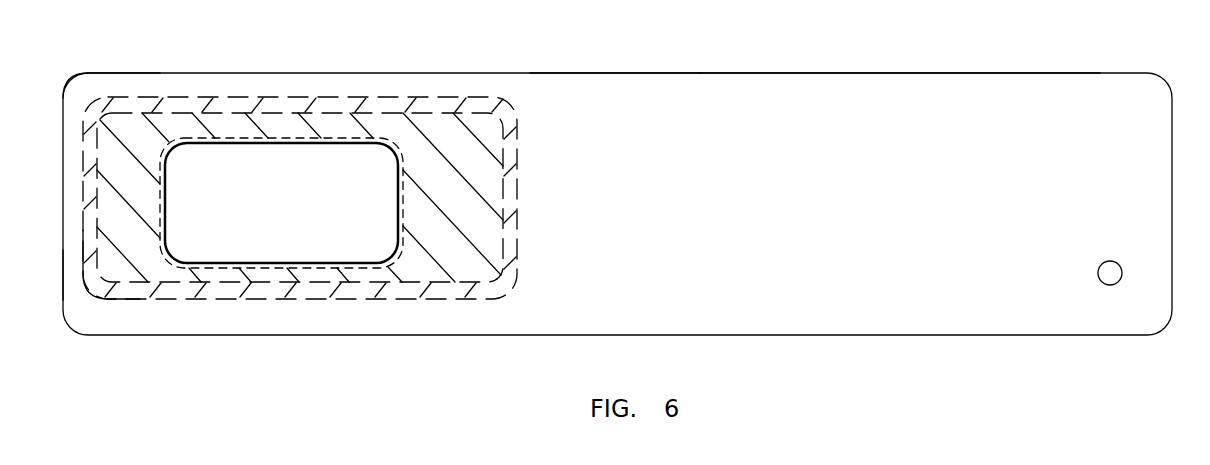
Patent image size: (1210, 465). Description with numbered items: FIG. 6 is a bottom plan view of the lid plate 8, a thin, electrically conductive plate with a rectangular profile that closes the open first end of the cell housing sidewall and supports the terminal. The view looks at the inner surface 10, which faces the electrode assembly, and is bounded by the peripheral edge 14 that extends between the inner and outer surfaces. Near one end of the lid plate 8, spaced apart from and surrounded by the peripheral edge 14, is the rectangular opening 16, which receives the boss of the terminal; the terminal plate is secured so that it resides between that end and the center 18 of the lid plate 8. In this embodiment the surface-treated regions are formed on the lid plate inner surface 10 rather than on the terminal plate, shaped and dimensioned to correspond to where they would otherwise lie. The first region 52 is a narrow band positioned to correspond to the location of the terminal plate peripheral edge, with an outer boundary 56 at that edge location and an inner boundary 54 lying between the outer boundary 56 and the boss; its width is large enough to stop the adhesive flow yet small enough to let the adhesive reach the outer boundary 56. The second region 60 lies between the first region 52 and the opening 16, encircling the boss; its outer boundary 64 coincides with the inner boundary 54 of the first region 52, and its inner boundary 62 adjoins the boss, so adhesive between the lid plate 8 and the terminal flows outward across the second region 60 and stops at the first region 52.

The lid plate 8 is at (131, 37).
The inner surface 10 is at (1000, 305).
The peripheral edge 14 is at (885, 73).
The opening 16 is at (245, 265).
The center 18 is at (612, 208).
The first region 52 is at (450, 278).
The inner boundary 54 is at (435, 108).
The outer boundary 56 is at (145, 108).
The second region 60 is at (418, 264).
The inner boundary 62 is at (304, 135).
The outer boundary 64 is at (435, 108).